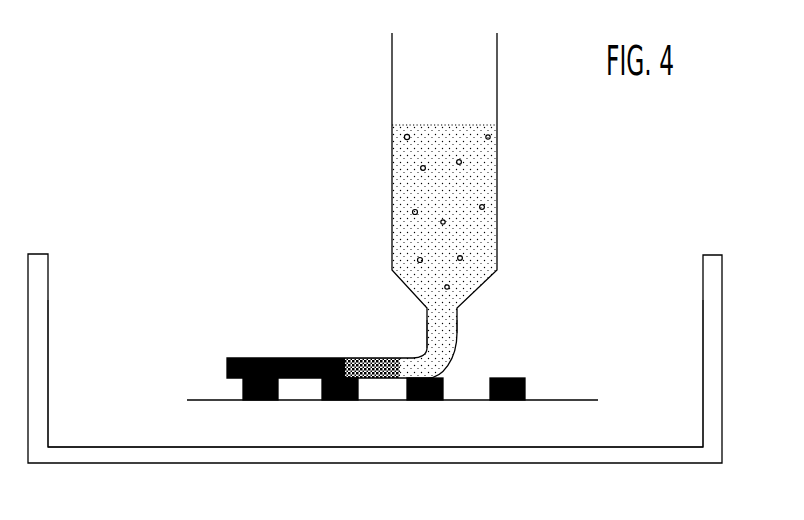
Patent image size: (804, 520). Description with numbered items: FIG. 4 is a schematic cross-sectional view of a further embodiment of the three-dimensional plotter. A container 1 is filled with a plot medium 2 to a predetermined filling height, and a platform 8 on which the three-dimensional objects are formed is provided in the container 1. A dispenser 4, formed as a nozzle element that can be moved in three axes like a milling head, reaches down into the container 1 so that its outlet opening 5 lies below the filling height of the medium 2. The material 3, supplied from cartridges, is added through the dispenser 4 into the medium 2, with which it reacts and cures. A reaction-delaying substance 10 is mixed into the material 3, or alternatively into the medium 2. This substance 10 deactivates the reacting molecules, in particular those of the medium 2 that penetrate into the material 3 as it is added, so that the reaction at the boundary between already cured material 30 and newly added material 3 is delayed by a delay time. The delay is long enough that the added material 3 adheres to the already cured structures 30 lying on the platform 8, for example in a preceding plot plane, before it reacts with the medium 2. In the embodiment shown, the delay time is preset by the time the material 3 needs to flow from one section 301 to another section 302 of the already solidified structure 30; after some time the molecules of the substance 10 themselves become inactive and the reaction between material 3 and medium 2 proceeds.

The container 1 is at (715, 297).
The medium 2 is at (688, 364).
The material component 3 is at (483, 213).
The dispenser 4 is at (497, 88).
The outlet opening 5 is at (458, 330).
The platform 8 is at (597, 400).
The reaction-delaying substance 10 is at (421, 167).
The cured structure 30 is at (238, 388).
The first section of solidified structure 301 is at (358, 388).
The second section of solidified structure 302 is at (442, 388).